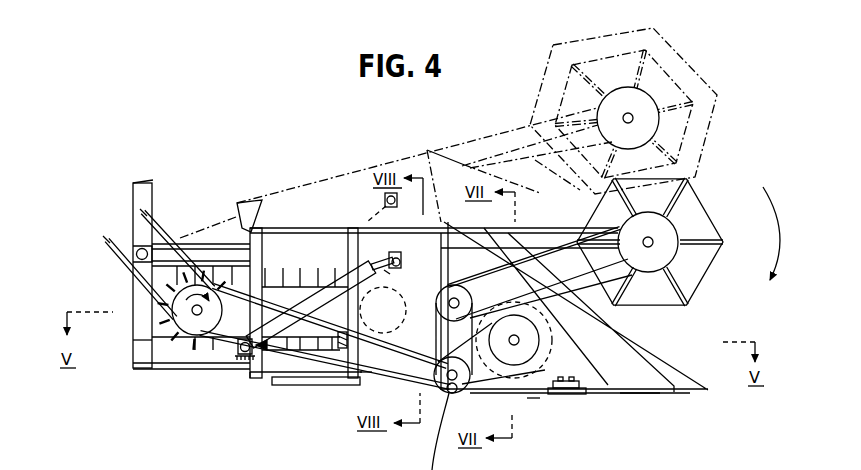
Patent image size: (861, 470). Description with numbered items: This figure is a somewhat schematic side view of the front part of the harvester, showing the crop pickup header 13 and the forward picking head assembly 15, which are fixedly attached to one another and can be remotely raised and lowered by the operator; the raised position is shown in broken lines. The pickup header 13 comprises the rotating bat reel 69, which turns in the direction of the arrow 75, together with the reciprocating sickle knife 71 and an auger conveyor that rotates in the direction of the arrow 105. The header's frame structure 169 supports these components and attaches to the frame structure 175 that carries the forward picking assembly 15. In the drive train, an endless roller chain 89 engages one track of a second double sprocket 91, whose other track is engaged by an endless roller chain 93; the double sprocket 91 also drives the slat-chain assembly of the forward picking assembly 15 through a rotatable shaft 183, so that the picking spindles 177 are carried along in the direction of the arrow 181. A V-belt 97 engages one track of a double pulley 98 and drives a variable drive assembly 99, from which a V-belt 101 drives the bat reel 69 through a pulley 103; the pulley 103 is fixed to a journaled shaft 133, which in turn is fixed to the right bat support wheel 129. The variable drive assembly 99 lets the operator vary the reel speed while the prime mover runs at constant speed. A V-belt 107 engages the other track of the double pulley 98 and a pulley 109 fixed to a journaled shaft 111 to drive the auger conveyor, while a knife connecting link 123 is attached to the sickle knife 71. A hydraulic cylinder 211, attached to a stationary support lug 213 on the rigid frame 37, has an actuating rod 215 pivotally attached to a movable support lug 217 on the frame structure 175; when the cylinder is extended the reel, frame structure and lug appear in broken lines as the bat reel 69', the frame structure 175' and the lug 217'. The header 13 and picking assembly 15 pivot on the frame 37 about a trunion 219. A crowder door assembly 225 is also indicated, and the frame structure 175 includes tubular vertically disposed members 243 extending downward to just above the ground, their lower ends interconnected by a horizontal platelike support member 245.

The crop pickup header 13 is at (512, 95).
The forward picking head assembly 15 is at (197, 317).
The rigid frame 37 is at (136, 197).
The bat reel 69 is at (666, 208).
The bat reel in raised position 69' is at (636, 105).
The reciprocating sickle knife 71 is at (583, 386).
The arrow 75 is at (772, 224).
The endless roller chain 89 is at (166, 237).
The second double sprocket 91 is at (137, 343).
The endless roller chain 93 is at (365, 372).
The V-belt 97 is at (445, 320).
The double pulley 98 is at (449, 393).
The variable drive assembly 99 is at (447, 286).
The V-belt 101 is at (520, 250).
The pulley 103 is at (670, 255).
The arrow 105 is at (572, 358).
The V-belt 107 is at (505, 395).
The pulley 109 is at (518, 346).
The journaled shaft 111 is at (527, 398).
The knife connecting link 123 is at (630, 394).
The right bat support wheel 129 is at (717, 283).
The journaled shaft 133 is at (647, 238).
The frame structure 169 is at (652, 358).
The frame structure 175 is at (208, 278).
The frame structure in raised position 175' is at (396, 173).
The picking spindles 177 is at (292, 273).
The arrow 181 is at (175, 303).
The rotatable shaft 183 is at (185, 333).
The hydraulic cylinder 211 is at (300, 312).
The stationary support lug 213 is at (240, 354).
The actuating rod 215 is at (386, 274).
The movable support lug 217 is at (416, 249).
The movable support lug in raised position 217' is at (362, 187).
The trunion 219 is at (135, 250).
The crowder door assembly 225 is at (287, 385).
The tubular vertically disposed members 243 is at (251, 230).
The horizontal platelike support members 245 is at (250, 378).